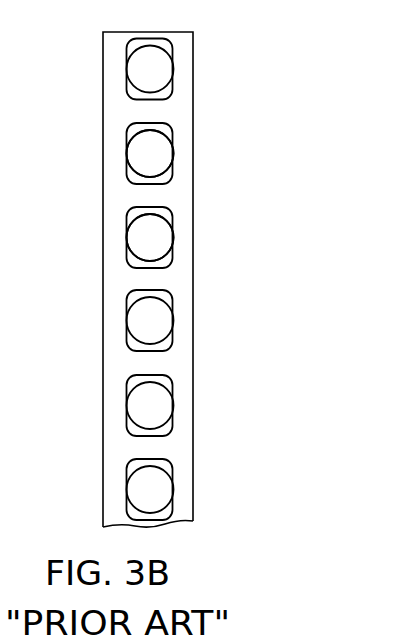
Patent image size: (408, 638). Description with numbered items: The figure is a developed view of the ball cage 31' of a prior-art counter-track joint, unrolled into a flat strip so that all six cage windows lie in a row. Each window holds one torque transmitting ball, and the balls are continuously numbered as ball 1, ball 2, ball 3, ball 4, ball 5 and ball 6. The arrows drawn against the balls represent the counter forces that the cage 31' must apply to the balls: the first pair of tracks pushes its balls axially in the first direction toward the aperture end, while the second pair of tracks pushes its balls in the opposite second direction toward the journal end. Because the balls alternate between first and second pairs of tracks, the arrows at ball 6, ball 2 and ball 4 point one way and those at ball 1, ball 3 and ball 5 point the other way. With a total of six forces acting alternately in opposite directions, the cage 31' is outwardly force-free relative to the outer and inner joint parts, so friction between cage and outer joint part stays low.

The ball cage 31' is at (171, 279).
The ball 1 is at (118, 153).
The ball 2 is at (203, 238).
The ball 3 is at (118, 320).
The ball 4 is at (202, 405).
The ball 5 is at (118, 490).
The ball 6 is at (197, 69).